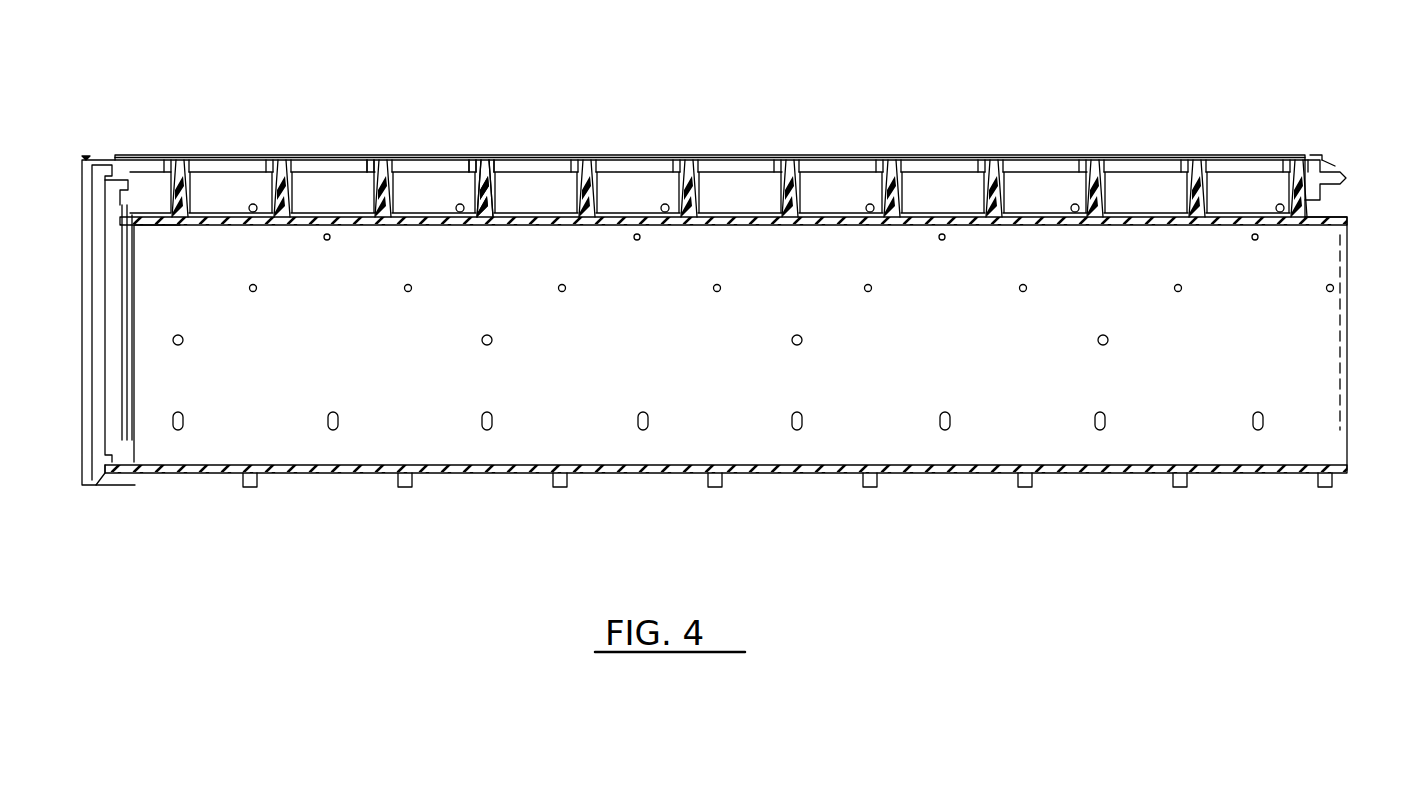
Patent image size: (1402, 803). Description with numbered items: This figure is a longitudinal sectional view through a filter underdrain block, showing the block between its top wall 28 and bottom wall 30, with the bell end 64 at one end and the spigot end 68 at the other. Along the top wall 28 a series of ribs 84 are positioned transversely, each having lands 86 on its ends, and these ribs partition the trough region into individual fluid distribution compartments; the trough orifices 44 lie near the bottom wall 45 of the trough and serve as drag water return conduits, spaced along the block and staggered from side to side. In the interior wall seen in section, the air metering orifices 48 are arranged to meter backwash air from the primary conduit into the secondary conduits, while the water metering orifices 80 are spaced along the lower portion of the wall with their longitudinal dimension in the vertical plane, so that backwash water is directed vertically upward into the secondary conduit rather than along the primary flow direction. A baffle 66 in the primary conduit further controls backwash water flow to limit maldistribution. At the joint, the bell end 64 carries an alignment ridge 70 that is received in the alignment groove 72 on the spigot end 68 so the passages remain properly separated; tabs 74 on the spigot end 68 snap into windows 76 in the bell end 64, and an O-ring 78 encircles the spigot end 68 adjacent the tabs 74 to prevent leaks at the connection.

The top wall 28 is at (752, 172).
The bottom wall 30 is at (808, 475).
The orifices 44 is at (252, 204).
The bottom wall of the trough 45 is at (557, 225).
The air metering orifices 48 is at (942, 240).
The bell end 64 is at (87, 158).
The baffle 66 is at (134, 378).
The spigot end 68 is at (1342, 186).
The alignment ridge 70 is at (118, 283).
The alignment groove 72 is at (1345, 292).
The tabs 74 is at (1318, 158).
The windows 76 is at (112, 158).
The O-ring 78 is at (1335, 165).
The water metering orifices 80 is at (637, 422).
The ribs 84 is at (495, 185).
The lands 86 is at (398, 170).